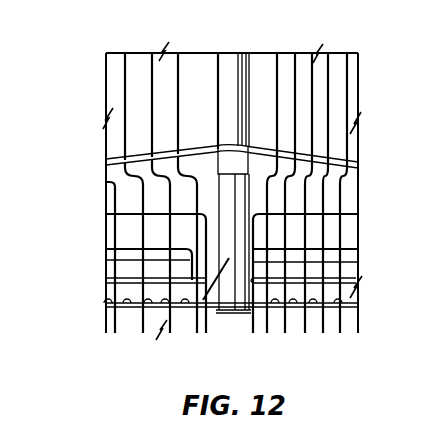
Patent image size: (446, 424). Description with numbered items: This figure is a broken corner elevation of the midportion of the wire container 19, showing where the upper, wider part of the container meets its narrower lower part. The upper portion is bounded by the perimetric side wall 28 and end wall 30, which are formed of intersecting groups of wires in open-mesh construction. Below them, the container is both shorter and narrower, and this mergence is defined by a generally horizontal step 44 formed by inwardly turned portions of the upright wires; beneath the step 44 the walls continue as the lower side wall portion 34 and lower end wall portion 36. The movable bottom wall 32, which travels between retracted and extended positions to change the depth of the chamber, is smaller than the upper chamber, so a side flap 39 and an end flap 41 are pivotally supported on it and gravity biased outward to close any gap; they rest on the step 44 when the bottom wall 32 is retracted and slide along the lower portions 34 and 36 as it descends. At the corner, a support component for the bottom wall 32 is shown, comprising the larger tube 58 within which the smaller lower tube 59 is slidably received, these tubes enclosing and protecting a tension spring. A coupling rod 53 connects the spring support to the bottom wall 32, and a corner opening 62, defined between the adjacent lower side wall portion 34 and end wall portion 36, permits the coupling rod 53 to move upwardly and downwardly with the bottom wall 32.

The container 19 is at (359, 60).
The side wall 28 is at (357, 85).
The end wall 30 is at (105, 86).
The tube 58 is at (248, 63).
The step 44 is at (114, 183).
The end flap 41 is at (132, 246).
The side flap 39 is at (343, 248).
The lower end wall portion 36 is at (110, 316).
The lower side wall portion 34 is at (355, 327).
The bottom wall 32 is at (131, 306).
The lower tube 59 is at (218, 312).
The coupling rod 53 is at (232, 311).
The corner opening 62 is at (237, 328).